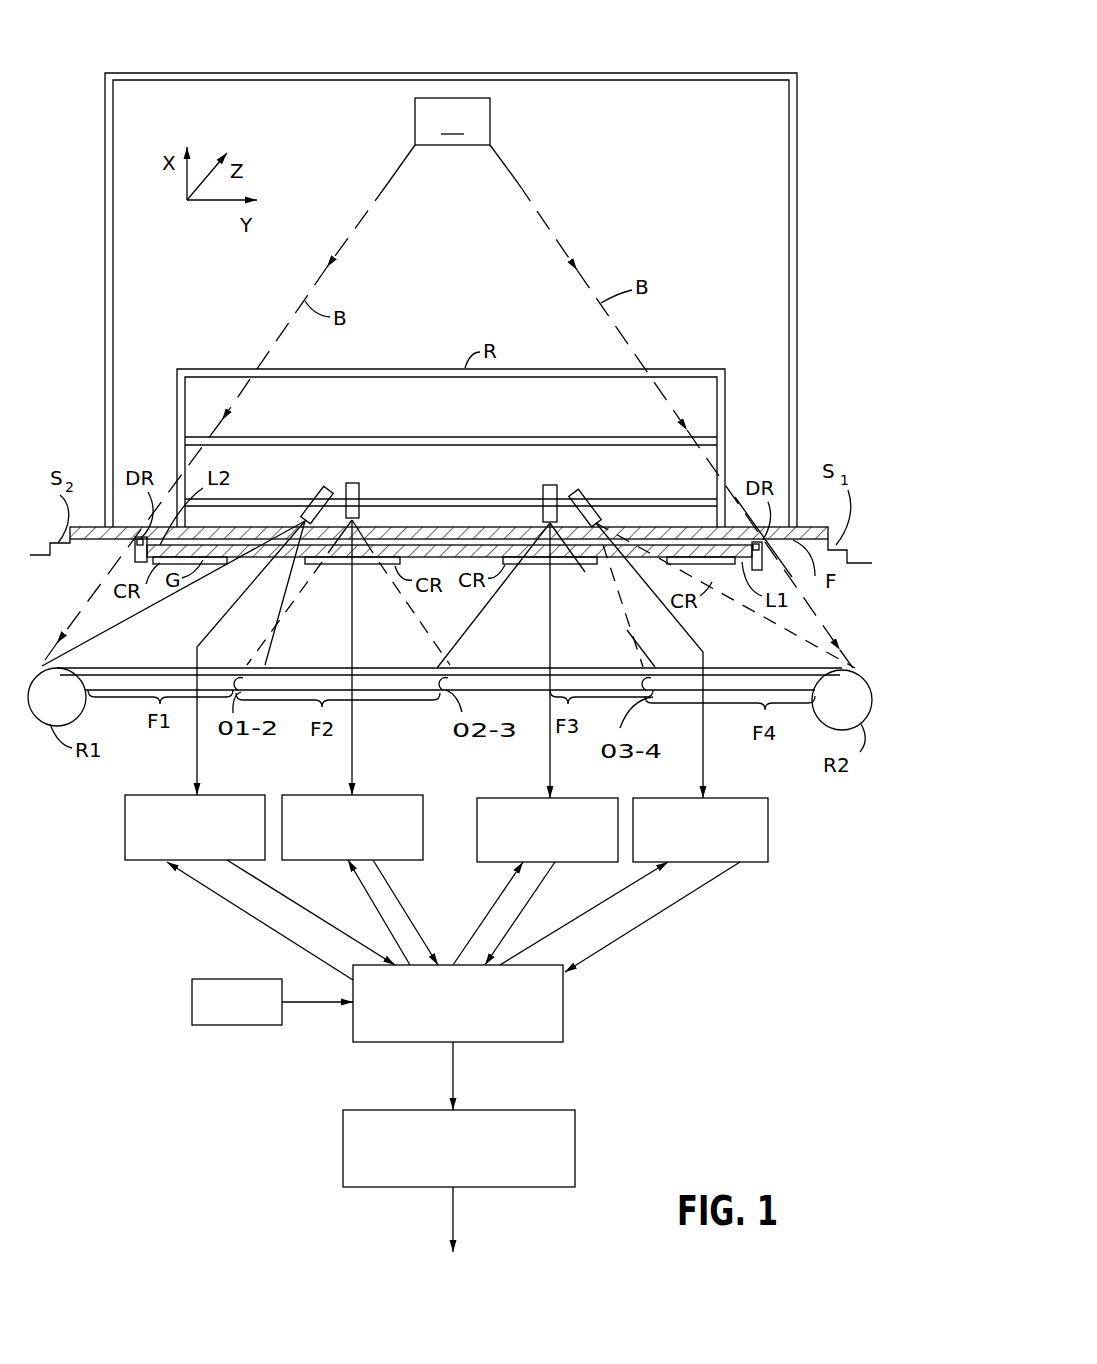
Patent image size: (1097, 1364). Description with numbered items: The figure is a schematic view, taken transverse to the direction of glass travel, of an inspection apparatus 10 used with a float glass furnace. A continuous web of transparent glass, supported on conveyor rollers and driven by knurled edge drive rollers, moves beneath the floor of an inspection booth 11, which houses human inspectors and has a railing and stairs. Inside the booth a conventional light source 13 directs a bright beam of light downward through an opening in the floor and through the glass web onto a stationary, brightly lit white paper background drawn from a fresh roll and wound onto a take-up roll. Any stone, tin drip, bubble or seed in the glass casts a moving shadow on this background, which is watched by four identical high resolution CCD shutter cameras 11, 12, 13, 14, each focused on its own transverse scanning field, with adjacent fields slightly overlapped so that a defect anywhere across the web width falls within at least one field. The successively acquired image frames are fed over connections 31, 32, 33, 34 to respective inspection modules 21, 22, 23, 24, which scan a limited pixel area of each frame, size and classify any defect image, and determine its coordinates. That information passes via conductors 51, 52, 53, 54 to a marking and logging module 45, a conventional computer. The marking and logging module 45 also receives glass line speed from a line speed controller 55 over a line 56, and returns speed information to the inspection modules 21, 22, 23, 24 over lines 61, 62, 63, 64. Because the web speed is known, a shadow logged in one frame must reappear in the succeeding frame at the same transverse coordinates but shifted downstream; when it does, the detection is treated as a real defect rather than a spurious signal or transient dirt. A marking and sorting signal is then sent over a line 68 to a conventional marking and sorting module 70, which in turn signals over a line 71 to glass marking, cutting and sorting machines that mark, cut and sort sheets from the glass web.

The inspection apparatus 10 is at (644, 958).
The inspection booth / CCD camera 11 is at (679, 55).
The CCD camera 12 is at (360, 482).
The light source / CCD camera 13 is at (542, 484).
The CCD camera 14 is at (573, 485).
The inspection module 21 is at (231, 795).
The inspection module 22 is at (369, 795).
The inspection module 23 is at (576, 798).
The inspection module 24 is at (741, 798).
The connection 31 is at (221, 618).
The connection 32 is at (353, 622).
The connection 33 is at (550, 604).
The connection 34 is at (700, 643).
The marking and logging module 45 is at (563, 995).
The conductor 51 is at (292, 898).
The conductor 52 is at (398, 898).
The conductor 53 is at (512, 925).
The conductor 54 is at (661, 912).
The line speed controller 55 is at (236, 1025).
The line 56 is at (322, 1005).
The line 61 is at (275, 931).
The line 62 is at (387, 926).
The line 63 is at (489, 912).
The line 64 is at (603, 902).
The line 68 is at (455, 1068).
The marking and sorting module 70 is at (575, 1137).
The line 71 is at (454, 1215).